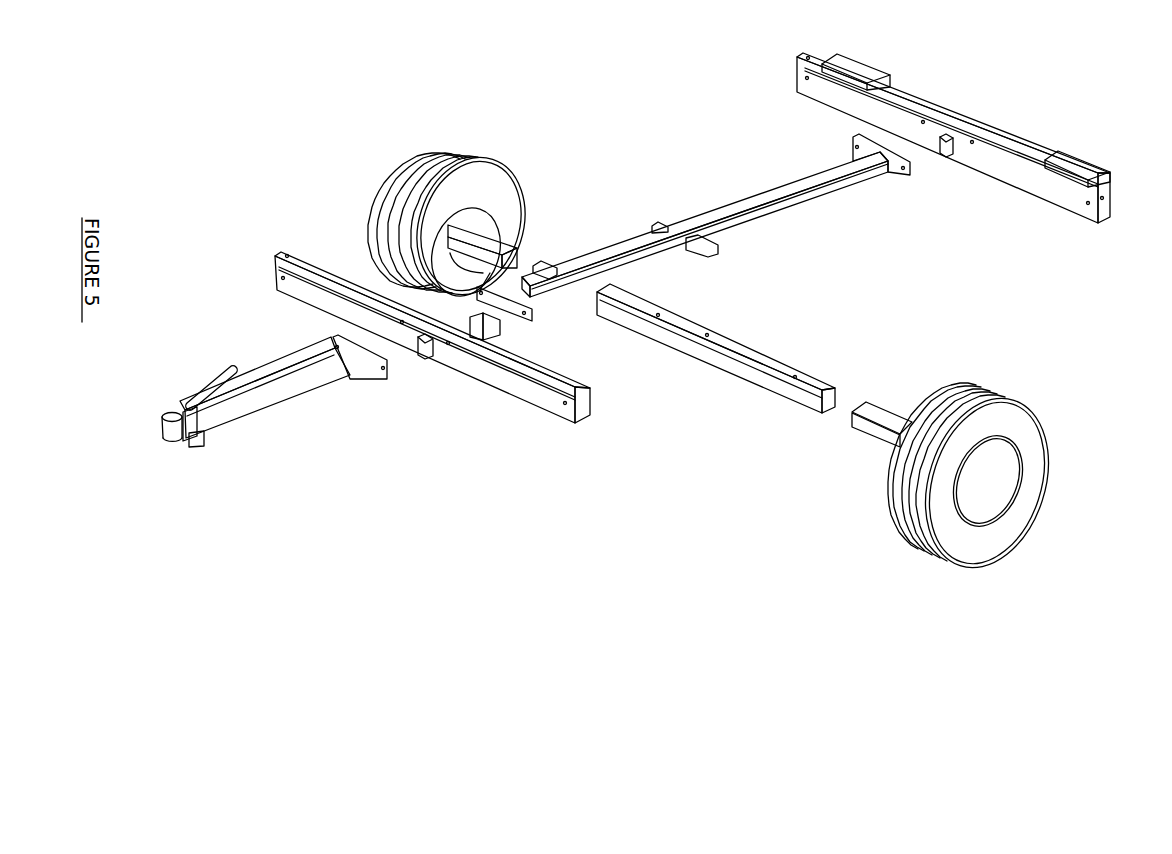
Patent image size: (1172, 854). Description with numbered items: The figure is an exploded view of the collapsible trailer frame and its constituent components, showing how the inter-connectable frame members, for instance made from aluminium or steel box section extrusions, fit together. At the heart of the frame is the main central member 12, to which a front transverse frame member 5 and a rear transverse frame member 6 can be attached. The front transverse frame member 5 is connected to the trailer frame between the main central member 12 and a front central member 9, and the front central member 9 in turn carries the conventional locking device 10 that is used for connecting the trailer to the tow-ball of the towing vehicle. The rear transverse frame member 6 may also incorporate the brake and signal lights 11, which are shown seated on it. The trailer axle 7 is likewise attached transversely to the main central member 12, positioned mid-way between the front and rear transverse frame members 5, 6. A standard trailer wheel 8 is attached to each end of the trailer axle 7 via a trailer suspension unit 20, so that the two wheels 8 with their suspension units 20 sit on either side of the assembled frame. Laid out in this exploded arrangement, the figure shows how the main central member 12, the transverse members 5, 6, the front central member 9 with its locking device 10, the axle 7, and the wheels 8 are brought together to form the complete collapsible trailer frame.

The front transverse frame member 5 is at (432, 360).
The rear transverse frame member 6 is at (953, 159).
The trailer axle 7 is at (716, 369).
The trailer wheel 8 is at (738, 339).
The front central member 9 is at (283, 401).
The locking device 10 is at (208, 374).
The brake and signal lights 11 is at (995, 100).
The main central member 12 is at (696, 237).
The trailer suspension unit 20 is at (715, 317).